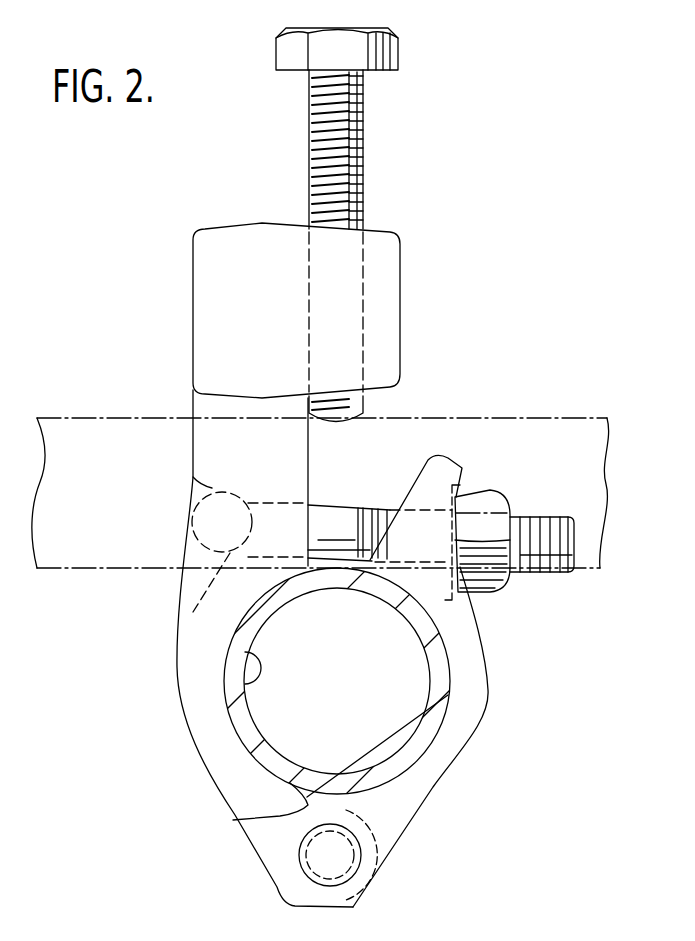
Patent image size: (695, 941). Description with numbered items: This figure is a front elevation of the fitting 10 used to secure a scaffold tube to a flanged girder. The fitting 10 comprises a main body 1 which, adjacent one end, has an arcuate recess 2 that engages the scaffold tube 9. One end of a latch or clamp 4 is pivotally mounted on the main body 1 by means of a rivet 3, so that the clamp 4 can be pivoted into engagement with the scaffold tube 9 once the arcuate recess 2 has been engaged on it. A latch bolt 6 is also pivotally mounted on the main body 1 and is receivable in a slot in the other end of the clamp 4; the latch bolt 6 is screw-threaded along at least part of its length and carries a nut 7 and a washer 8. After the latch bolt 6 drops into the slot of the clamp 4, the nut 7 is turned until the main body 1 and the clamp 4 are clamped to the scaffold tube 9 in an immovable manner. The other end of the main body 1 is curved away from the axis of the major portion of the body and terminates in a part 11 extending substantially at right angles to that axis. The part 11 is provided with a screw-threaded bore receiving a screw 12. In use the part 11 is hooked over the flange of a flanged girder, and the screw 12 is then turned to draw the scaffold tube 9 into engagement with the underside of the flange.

The main body 1 is at (207, 432).
The arcuate recess 2 is at (253, 678).
The rivet 3 is at (345, 853).
The clamp 4 is at (483, 707).
The latch bolt 6 is at (362, 505).
The nut 7 is at (495, 502).
The washer 8 is at (463, 560).
The scaffold tube 9 is at (253, 745).
The fitting 10 is at (200, 622).
The part 11 is at (386, 258).
The screw 12 is at (364, 114).